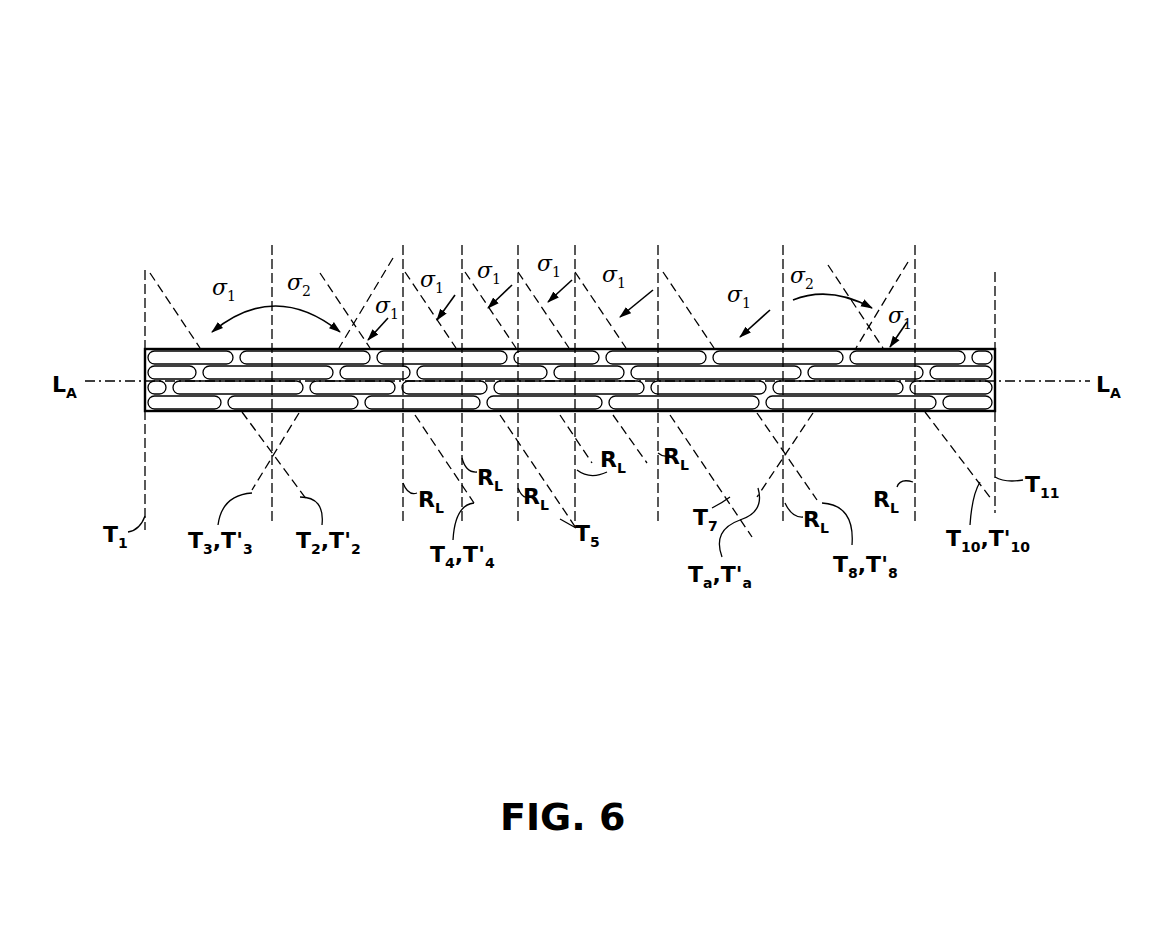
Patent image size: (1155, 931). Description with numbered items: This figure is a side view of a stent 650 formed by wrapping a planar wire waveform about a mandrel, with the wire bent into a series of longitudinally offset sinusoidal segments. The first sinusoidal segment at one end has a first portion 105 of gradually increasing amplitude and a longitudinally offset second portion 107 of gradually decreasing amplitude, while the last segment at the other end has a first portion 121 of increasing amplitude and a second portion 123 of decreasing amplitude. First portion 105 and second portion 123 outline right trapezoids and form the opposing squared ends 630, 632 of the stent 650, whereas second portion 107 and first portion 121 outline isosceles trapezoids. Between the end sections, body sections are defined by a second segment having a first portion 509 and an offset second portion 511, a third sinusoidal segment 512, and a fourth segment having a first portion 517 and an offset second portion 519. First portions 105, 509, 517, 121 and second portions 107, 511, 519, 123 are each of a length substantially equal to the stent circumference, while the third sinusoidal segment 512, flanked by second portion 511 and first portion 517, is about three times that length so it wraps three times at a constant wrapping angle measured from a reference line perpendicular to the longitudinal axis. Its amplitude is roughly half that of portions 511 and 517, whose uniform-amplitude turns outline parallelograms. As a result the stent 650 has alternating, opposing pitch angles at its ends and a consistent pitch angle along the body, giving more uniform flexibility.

The stent 650 is at (637, 147).
The squared end 630 is at (147, 396).
The squared end 632 is at (990, 357).
The first portion 105 is at (193, 413).
The second portion 107 is at (263, 348).
The first portion 509 is at (360, 413).
The second portion 511 is at (480, 413).
The third sinusoidal segment 512 is at (724, 488).
The first portion 517 is at (723, 413).
The second portion 519 is at (843, 347).
The first portion 121 is at (835, 413).
The second portion 123 is at (927, 348).